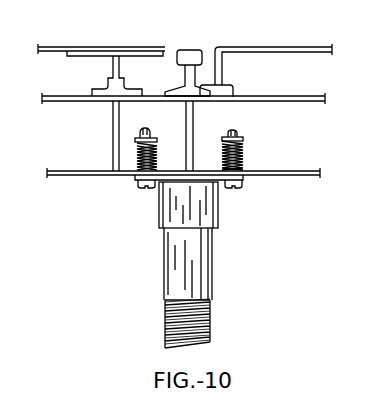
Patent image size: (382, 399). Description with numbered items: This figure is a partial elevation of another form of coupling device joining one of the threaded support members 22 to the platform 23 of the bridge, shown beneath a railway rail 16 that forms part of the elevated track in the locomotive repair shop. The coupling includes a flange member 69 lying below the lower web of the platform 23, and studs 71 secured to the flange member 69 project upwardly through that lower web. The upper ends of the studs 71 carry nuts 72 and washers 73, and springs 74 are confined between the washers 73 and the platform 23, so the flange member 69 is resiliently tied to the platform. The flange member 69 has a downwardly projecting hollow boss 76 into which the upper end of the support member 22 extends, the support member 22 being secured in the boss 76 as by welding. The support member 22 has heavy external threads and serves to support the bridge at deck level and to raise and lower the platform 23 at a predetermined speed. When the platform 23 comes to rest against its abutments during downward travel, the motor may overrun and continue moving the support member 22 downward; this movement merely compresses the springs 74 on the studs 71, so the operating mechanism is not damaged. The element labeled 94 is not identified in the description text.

The railway rails 16 is at (191, 50).
The support member 22 is at (207, 263).
The platform 23 is at (258, 44).
The flange member 69 is at (243, 180).
The studs 71 is at (140, 162).
The nuts 72 is at (238, 133).
The washers 73 is at (150, 128).
The springs 74 is at (158, 150).
The hollow boss 76 is at (173, 205).
The washer 94 is at (224, 148).